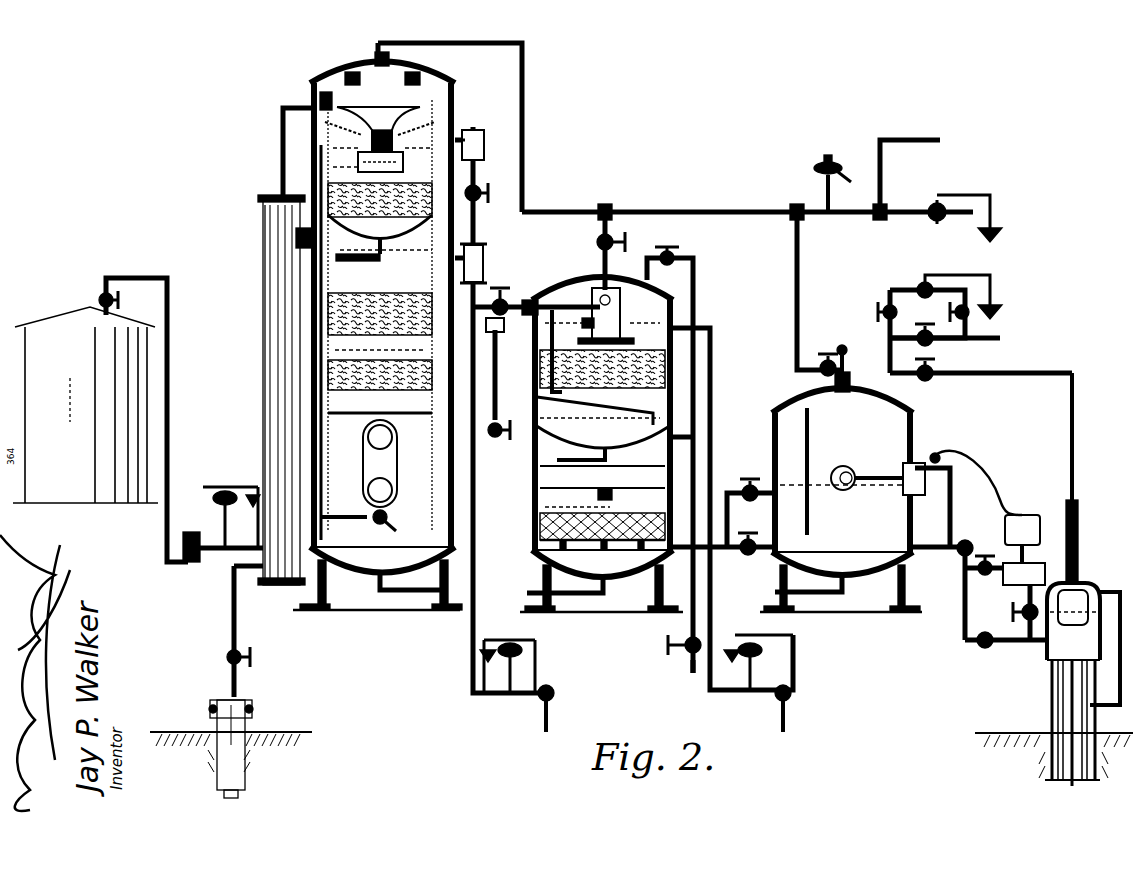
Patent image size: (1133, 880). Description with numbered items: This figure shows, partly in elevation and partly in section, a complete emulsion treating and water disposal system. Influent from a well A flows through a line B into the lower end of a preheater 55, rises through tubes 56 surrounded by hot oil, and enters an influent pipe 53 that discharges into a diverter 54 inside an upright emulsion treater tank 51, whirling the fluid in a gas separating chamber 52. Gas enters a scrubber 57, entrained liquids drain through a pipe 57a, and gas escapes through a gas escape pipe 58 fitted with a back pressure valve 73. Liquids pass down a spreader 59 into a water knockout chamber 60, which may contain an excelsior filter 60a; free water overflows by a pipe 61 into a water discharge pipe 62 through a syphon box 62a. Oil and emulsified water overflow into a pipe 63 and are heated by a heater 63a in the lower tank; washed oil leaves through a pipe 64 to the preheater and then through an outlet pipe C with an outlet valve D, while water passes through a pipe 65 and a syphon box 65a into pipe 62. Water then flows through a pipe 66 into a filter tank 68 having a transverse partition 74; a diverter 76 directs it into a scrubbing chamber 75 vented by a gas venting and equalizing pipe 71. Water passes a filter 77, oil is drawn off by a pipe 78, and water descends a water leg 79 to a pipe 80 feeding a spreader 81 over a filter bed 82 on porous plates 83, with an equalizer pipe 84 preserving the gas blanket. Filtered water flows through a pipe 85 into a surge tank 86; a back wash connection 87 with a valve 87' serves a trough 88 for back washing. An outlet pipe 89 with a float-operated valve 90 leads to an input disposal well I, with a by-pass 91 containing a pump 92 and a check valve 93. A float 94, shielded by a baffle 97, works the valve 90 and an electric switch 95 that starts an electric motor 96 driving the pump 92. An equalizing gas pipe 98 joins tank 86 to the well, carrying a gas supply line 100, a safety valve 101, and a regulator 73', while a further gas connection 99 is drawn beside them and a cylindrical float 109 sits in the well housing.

The emulsion treater tank 51 is at (272, 293).
The gas separating chamber 52 is at (445, 100).
The influent pipe 53 is at (280, 135).
The diverter 54 is at (325, 92).
The preheater 55 is at (306, 365).
The tubes 56 is at (272, 400).
The scrubber 57 is at (400, 100).
The pipe 57a is at (392, 134).
The gas escape pipe 58 is at (452, 43).
The spreader 59 is at (402, 151).
The water knockout chamber 60 is at (440, 172).
The filter 60a is at (355, 212).
The pipe 61 is at (482, 190).
The water discharge pipe 62 is at (478, 140).
The syphon box 62a is at (486, 140).
The pipe 63 is at (318, 165).
The heater 63a is at (370, 455).
The pipe 64 is at (278, 272).
The pipe 65 is at (445, 355).
The syphon box 65a is at (485, 256).
The pipe 66 is at (535, 303).
The filter tank 68 is at (676, 392).
The gas venting and equalizing pipe 71 is at (598, 229).
The back pressure valve 73 is at (943, 219).
The regulator 73' is at (940, 316).
The transverse partition 74 is at (620, 450).
The scrubbing chamber 75 is at (622, 300).
The diverter 76 is at (594, 300).
The filter 77 is at (655, 370).
The pipe 78 is at (714, 328).
The water leg 79 is at (549, 336).
The pipe 80 is at (514, 390).
The spreader 81 is at (598, 506).
The filter bed 82 is at (540, 527).
The porous plates 83 is at (582, 548).
The equalizer pipe 84 is at (697, 300).
The pipe 85 is at (712, 555).
The surge tank 86 is at (915, 425).
The back wash connection 87 is at (665, 635).
The valve 87' is at (660, 664).
The trough 88 is at (680, 458).
The outlet pipe 89 is at (945, 555).
The float-operated valve 90 is at (975, 540).
The by-pass 91 is at (1020, 612).
The pump 92 is at (1020, 575).
The check valve 93 is at (982, 648).
The float 94 is at (845, 466).
The electric switch 95 is at (937, 452).
The electric motor 96 is at (1038, 515).
The baffle 97 is at (810, 428).
The equalizing gas pipe 98 is at (801, 278).
The pipe 99 is at (962, 380).
The gas supply line 100 is at (996, 345).
The safety valve 101 is at (846, 345).
The cylindrical float 109 is at (1078, 590).
The well A is at (252, 722).
The line B is at (240, 622).
The outlet pipe C is at (228, 566).
The outlet valve D is at (183, 541).
The input disposal well I is at (1050, 700).